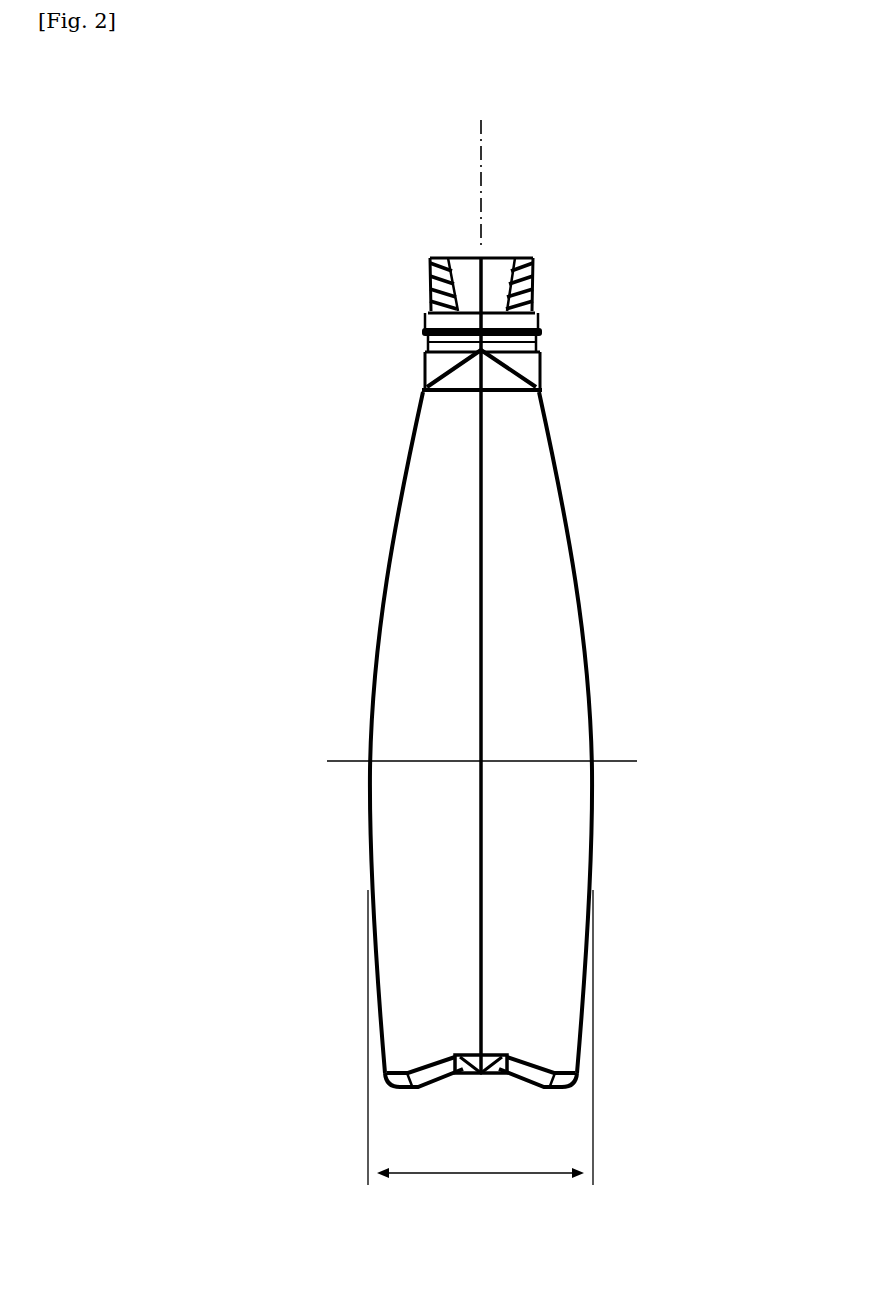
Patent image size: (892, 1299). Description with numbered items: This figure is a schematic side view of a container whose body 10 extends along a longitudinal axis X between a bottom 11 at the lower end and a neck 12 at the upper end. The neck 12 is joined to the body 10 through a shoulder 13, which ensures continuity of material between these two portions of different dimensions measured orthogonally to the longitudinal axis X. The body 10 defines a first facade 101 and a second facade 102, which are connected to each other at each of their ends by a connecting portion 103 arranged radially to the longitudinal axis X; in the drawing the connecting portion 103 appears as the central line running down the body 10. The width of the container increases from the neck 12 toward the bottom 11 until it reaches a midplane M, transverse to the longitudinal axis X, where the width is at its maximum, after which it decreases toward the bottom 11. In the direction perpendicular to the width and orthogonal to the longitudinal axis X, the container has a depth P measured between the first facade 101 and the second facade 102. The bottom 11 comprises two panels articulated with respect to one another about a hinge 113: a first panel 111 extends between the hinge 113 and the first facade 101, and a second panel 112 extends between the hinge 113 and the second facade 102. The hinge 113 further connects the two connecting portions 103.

The body 10 is at (450, 697).
The bottom 11 is at (499, 1109).
The neck 12 is at (556, 292).
The shoulder 13 is at (554, 377).
The first facade 101 is at (410, 613).
The second facade 102 is at (530, 630).
The connecting portion 103 is at (481, 520).
The first panel 111 is at (437, 1088).
The second panel 112 is at (521, 1084).
The hinge 113 is at (480, 1067).
The longitudinal axis X is at (481, 182).
The midplane M is at (335, 762).
The depth P is at (480, 1037).